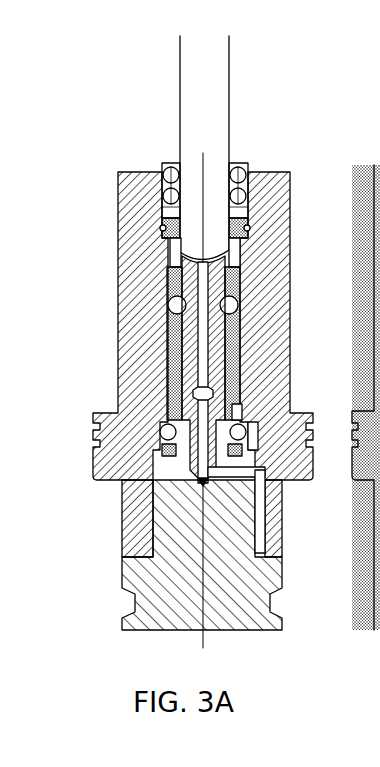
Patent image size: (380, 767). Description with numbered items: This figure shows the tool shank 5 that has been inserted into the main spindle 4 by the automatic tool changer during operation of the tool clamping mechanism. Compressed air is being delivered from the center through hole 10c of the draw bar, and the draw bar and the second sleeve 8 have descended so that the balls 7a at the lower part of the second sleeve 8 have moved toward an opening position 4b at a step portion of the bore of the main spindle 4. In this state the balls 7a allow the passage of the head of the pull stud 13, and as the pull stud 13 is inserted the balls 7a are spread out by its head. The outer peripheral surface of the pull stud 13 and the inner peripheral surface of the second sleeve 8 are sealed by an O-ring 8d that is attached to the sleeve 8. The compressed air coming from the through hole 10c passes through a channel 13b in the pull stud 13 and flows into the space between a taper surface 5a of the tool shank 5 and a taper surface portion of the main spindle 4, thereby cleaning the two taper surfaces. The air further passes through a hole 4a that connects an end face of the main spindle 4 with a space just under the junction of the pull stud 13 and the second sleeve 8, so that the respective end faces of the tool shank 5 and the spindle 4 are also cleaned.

The center through hole 10c is at (282, 228).
The main spindle 4 is at (280, 256).
The second sleeve 8 is at (240, 345).
The pull stud 13 is at (228, 383).
The O-ring 8d is at (243, 413).
The opening position 4b is at (265, 420).
The balls 7a is at (166, 428).
The channel 13b is at (204, 484).
The taper surface 5a is at (122, 547).
The hole 4a is at (280, 512).
The tool shank 5 is at (265, 603).